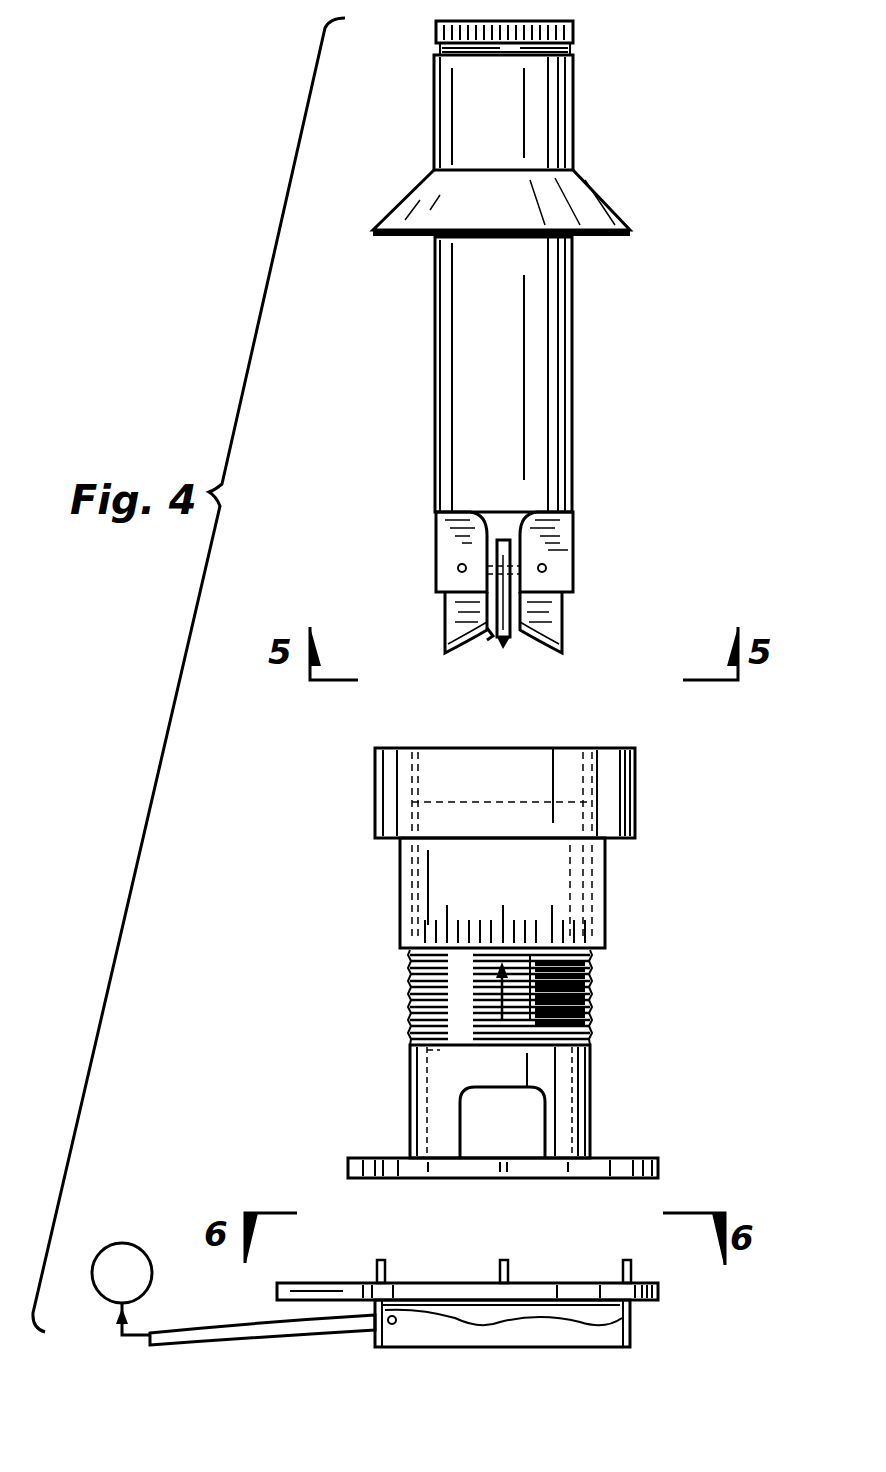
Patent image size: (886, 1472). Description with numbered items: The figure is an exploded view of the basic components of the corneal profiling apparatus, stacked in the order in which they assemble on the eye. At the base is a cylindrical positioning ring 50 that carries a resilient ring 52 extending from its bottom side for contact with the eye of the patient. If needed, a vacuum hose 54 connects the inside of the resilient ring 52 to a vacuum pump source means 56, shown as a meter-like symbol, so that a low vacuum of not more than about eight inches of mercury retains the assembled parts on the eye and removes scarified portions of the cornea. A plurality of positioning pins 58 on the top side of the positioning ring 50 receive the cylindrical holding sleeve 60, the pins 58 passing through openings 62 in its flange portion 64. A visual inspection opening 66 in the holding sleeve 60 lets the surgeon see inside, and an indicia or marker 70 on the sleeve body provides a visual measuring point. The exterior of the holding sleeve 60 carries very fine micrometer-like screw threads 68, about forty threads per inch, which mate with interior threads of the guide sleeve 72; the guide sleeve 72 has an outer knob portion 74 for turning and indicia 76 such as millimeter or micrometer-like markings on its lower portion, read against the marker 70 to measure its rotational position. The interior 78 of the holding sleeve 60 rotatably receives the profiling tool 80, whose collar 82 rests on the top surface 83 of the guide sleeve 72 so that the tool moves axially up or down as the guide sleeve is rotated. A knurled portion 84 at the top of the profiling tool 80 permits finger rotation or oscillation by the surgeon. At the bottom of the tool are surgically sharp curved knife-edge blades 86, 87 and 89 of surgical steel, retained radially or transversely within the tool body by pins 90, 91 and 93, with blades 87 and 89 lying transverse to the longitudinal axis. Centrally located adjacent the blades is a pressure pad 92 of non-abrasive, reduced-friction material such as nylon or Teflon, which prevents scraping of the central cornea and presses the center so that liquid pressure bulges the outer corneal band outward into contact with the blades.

The cylindrical positioning ring 50 is at (527, 1290).
The resilient ring 52 is at (558, 1348).
The vacuum hose 54 is at (233, 1338).
The vacuum pump source means 56 is at (96, 1298).
The positioning pins 58 is at (504, 1258).
The cylindrical holding sleeve 60 is at (592, 1085).
The openings 62 is at (630, 1157).
The flange portion 64 is at (658, 1172).
The visual inspection opening 66 is at (470, 1110).
The screw threads 68 is at (590, 985).
The indicia or marker 70 is at (497, 997).
The guide sleeve 72 is at (606, 890).
The outer knob portion 74 is at (636, 777).
The indicia 76 is at (412, 893).
The interior of the cylindrical holding sleeve 78 is at (440, 1050).
The profiling tool 80 is at (573, 393).
The collar 82 is at (610, 238).
The top surface of the guide sleeve 83 is at (563, 752).
The knurled portion 84 is at (575, 35).
The curved knife-edge blade 86 is at (560, 625).
The curved knife-edge blade 87 is at (455, 622).
The curved knife-edge blade 89 is at (506, 646).
The pin 90 is at (546, 567).
The pin 91 is at (547, 522).
The pressure pad 92 is at (489, 636).
The pin 93 is at (458, 567).